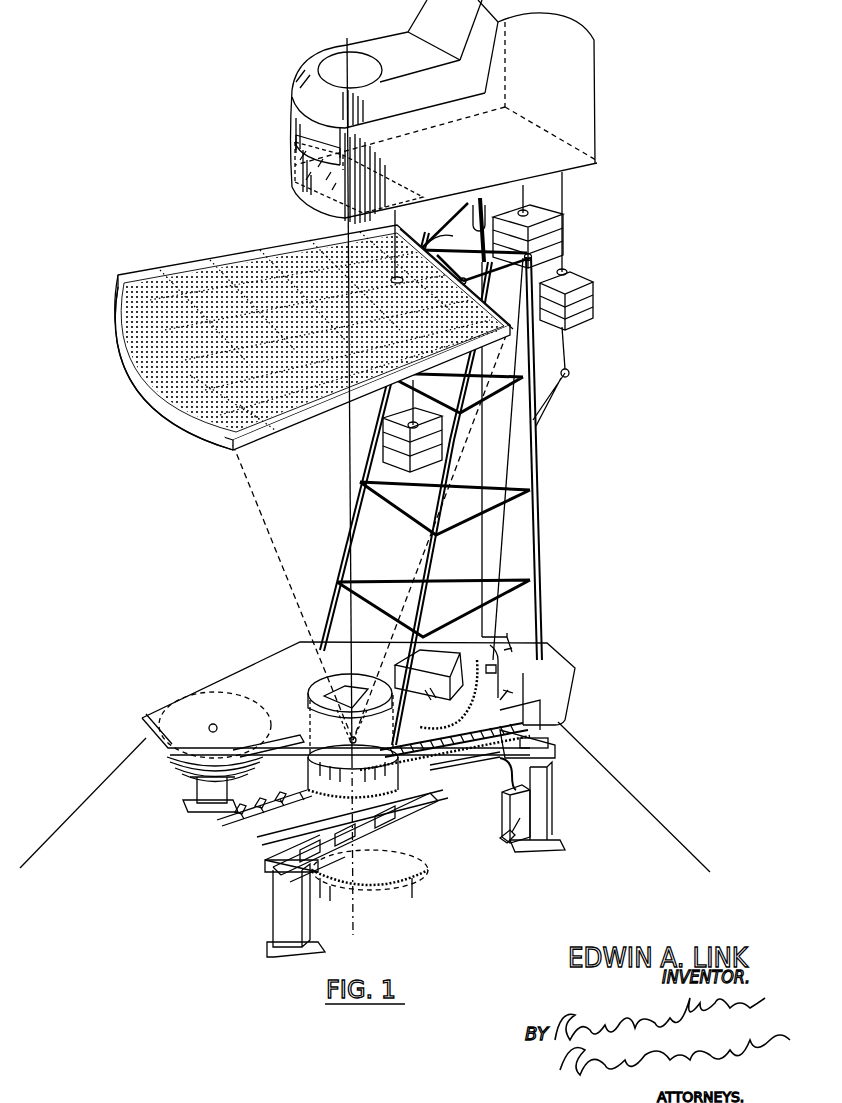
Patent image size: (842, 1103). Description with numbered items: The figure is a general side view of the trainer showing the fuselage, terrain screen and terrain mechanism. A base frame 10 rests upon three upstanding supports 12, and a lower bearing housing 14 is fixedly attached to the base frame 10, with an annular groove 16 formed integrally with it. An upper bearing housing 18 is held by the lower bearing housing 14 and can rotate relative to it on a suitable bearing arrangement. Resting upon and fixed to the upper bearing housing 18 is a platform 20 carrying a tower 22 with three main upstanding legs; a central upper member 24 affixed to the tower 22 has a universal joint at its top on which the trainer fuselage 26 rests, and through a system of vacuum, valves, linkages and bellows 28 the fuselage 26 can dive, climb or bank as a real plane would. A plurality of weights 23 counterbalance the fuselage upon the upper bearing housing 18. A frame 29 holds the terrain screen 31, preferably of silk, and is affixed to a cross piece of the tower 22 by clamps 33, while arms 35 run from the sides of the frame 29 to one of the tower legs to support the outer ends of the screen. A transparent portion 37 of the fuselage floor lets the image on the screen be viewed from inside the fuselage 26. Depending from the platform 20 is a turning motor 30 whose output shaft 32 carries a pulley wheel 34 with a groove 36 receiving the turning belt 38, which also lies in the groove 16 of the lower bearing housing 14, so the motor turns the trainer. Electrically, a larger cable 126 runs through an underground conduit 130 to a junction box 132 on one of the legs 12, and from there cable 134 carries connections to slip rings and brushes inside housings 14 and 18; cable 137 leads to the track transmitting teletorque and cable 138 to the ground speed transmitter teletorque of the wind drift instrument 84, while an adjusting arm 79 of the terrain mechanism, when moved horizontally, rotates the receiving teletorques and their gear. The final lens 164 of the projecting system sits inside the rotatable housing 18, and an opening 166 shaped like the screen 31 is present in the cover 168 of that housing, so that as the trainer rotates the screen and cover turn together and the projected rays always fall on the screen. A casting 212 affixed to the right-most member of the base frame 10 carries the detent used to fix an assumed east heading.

The base frame 10 is at (545, 758).
The upstanding supports 12 is at (210, 790).
The lower bearing housing 14 is at (320, 790).
The annular groove 16 is at (397, 755).
The upper bearing housing 18 is at (247, 763).
The platform 20 is at (240, 686).
The tower 22 is at (546, 476).
The weights 23 is at (186, 768).
The central upper member 24 is at (483, 197).
The trainer fuselage 26 is at (598, 88).
The bellows 28 is at (548, 214).
The frame 29 is at (132, 341).
The turning motor 30 is at (548, 690).
The terrain screen 31 is at (190, 272).
The output shaft 32 is at (540, 712).
The clamps 33 is at (434, 249).
The pulley wheel 34 is at (545, 727).
The arms 35 is at (349, 434).
The groove 36 is at (500, 748).
The transparent portion 37 is at (308, 193).
The turning belt 38 is at (468, 758).
The adjusting arm 79 is at (369, 893).
The wind drift instrument 84 is at (436, 650).
The cable 126 is at (500, 840).
The underground conduit 130 is at (478, 858).
The junction box 132 is at (528, 806).
The cable 134 is at (520, 776).
The cable 137 is at (441, 707).
The cable 138 is at (490, 661).
The final lens 164 is at (347, 740).
The opening 166 is at (335, 698).
The cover 168 is at (350, 686).
The casting 212 is at (552, 736).